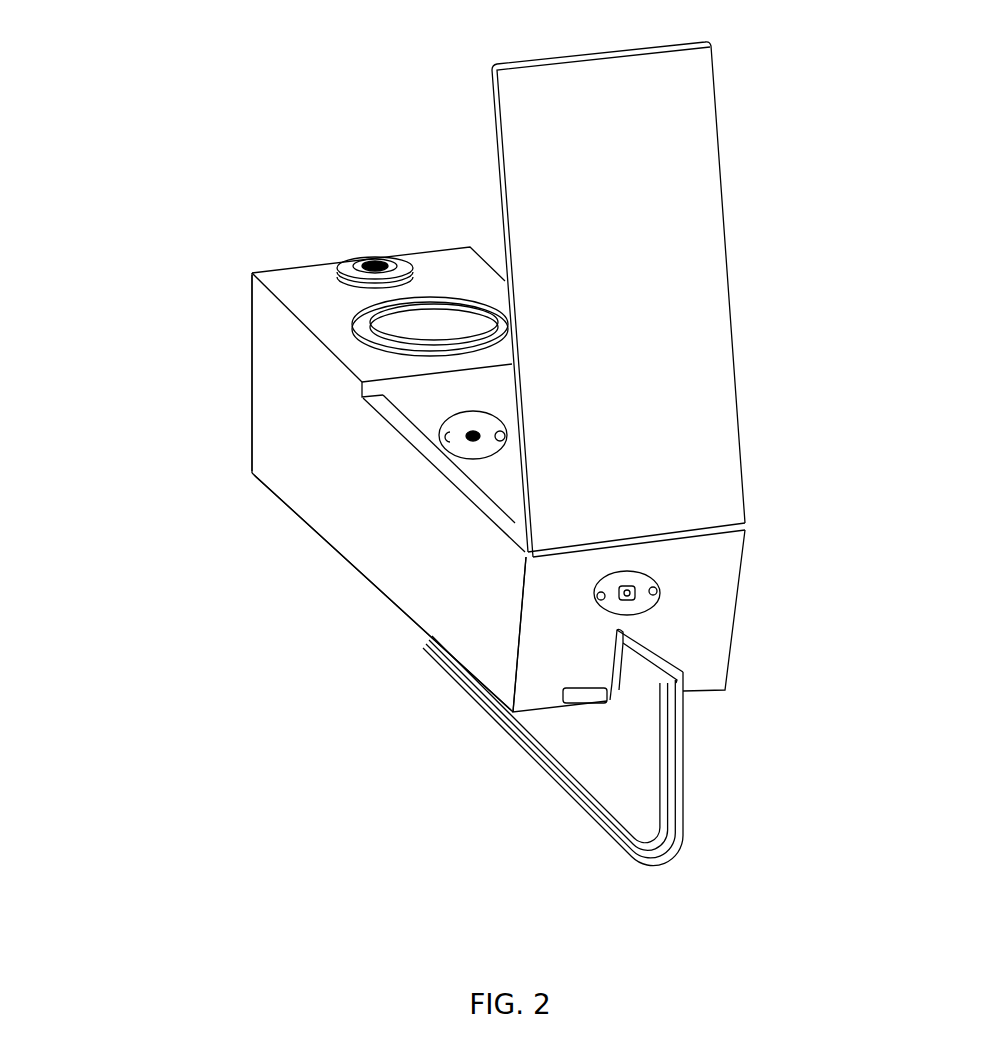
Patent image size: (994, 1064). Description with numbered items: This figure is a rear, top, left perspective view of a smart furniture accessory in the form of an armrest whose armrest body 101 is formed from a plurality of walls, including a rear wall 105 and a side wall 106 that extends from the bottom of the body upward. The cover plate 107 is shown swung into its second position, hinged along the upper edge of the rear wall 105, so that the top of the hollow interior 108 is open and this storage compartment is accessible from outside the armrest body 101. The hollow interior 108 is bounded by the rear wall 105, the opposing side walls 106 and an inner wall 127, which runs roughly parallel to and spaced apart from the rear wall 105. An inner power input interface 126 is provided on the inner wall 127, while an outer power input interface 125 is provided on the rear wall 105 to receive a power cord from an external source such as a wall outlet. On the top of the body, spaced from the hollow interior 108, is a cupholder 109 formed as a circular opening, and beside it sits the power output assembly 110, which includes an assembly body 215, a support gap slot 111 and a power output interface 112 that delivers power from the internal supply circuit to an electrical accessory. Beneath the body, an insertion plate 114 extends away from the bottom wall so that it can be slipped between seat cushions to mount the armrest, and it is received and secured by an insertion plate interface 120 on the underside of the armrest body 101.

The armrest body 101 is at (263, 413).
The rear wall 105 is at (707, 580).
The side wall 106 is at (363, 515).
The cover plate 107 is at (702, 440).
The hollow interior 108 is at (422, 398).
The cupholder 109 is at (437, 298).
The power output assembly 110 is at (375, 250).
The support gap slot 111 is at (381, 263).
The power output interface 112 is at (378, 266).
The insertion plate 114 is at (687, 740).
The insertion plate interface 120 is at (593, 697).
The outer power input interface 125 is at (590, 595).
The inner power input interface 126 is at (455, 437).
The inner wall 127 is at (432, 408).
The assembly body 215 is at (392, 258).